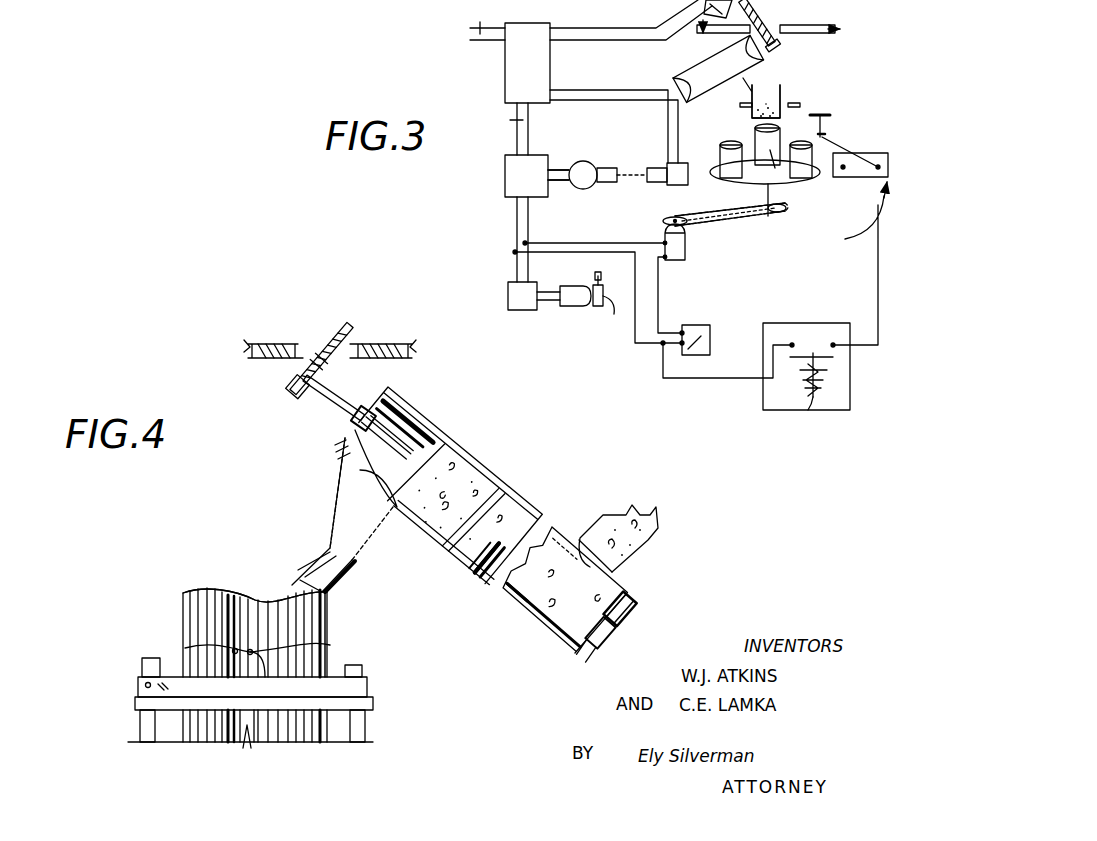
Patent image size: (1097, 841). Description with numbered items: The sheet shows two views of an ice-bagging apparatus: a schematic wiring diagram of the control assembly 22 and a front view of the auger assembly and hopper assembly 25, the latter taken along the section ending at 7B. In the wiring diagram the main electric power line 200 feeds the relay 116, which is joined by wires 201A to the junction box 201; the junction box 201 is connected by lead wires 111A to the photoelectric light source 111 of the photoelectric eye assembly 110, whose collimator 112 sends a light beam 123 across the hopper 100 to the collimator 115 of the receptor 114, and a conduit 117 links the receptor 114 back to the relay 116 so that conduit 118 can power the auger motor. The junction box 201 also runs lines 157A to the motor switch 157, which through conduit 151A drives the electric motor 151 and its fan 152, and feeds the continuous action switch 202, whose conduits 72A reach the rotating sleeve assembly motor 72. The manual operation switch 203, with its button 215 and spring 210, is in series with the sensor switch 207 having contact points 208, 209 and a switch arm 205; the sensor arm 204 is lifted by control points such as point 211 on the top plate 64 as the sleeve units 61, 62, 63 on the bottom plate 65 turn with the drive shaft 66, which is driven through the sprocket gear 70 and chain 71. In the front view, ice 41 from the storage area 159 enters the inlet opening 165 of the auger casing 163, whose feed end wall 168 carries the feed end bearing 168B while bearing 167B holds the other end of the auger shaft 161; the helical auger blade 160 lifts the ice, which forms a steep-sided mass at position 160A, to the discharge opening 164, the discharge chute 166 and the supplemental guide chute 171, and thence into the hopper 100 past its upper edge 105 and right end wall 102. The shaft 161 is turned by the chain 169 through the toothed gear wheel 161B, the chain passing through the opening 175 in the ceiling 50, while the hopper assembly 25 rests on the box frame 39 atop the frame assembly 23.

In FIG. 3, the control assembly 22 is at (432, 171).
In FIG. 4, the frame assembly 23 is at (144, 742).
In FIG. 4, the hopper assembly 25 is at (136, 598).
In FIG. 4, the top open rigid box frame 39 is at (135, 697).
In FIG. 3, the ice 41 is at (767, 96).
In FIG. 4, the ice 41 is at (466, 462).
In FIG. 4, the ceiling 50 is at (275, 347).
In FIG. 3, the sleeve unit 61 is at (805, 148).
In FIG. 4, the sleeve unit 61 is at (200, 742).
In FIG. 3, the sleeve unit 62 is at (729, 147).
In FIG. 4, the sleeve unit 62 is at (322, 742).
In FIG. 3, the sleeve unit 63 is at (766, 169).
In FIG. 4, the sleeve unit 63 is at (272, 742).
In FIG. 3, the top plate 64 is at (821, 113).
In FIG. 3, the bottom plate 65 is at (746, 185).
In FIG. 3, the drive shaft 66 is at (771, 200).
In FIG. 4, the drive shaft 66 is at (248, 742).
In FIG. 3, the sprocket gear 70 is at (772, 213).
In FIG. 3, the chain 71 is at (757, 219).
In FIG. 3, the rotating sleeve assembly motor 72 is at (686, 240).
In FIG. 3, the conduits 72A is at (662, 283).
In FIG. 3, the hopper 100 is at (784, 92).
In FIG. 4, the hopper 100 is at (200, 607).
In FIG. 4, the right end wall 102 is at (326, 626).
In FIG. 4, the upper edge 105 is at (213, 591).
In FIG. 4, the photoelectric eye assembly 110 is at (227, 648).
In FIG. 3, the photoelectric light source 111 is at (577, 166).
In FIG. 3, the lead wires 111A is at (559, 186).
In FIG. 3, the collimator 112 is at (607, 168).
In FIG. 3, the photoelectric receptor 114 is at (678, 185).
In FIG. 3, the collimator 115 is at (654, 182).
In FIG. 3, the relay 116 is at (522, 36).
In FIG. 4, the relay 116 is at (345, 670).
In FIG. 3, the conduit 117 is at (631, 97).
In FIG. 4, the conduit 117 is at (264, 651).
In FIG. 3, the conduit 118 is at (612, 24).
In FIG. 3, the light beam 123 is at (636, 168).
In FIG. 3, the electric motor 151 is at (575, 292).
In FIG. 3, the conduit 151A is at (547, 302).
In FIG. 3, the fan 152 is at (614, 303).
In FIG. 3, the motor switch 157 is at (513, 287).
In FIG. 3, the lines 157A is at (517, 218).
In FIG. 4, the storage area 159 is at (654, 510).
In FIG. 4, the auger blade 160 is at (493, 473).
In FIG. 4, the position 160A is at (373, 468).
In FIG. 4, the auger shaft 161 is at (333, 408).
In FIG. 4, the toothed gear wheel 161B is at (294, 380).
In FIG. 3, the auger casing 163 is at (712, 70).
In FIG. 4, the auger casing 163 is at (472, 573).
In FIG. 4, the discharge opening 164 is at (360, 470).
In FIG. 4, the inlet opening 165 is at (582, 536).
In FIG. 4, the discharge chute 166 is at (330, 528).
In FIG. 4, the bearing 167B is at (353, 426).
In FIG. 4, the feed end wall 168 is at (618, 599).
In FIG. 4, the feed end bearing 168B is at (600, 623).
In FIG. 4, the chain 169 is at (318, 350).
In FIG. 4, the supplemental guide chute 171 is at (348, 578).
In FIG. 4, the opening 175 is at (342, 356).
In FIG. 3, the main electric power line 200 is at (485, 20).
In FIG. 3, the junction box 201 is at (505, 176).
In FIG. 4, the junction box 201 is at (142, 667).
In FIG. 3, the wires 201A is at (497, 129).
In FIG. 3, the continuous action switch 202 is at (710, 343).
In FIG. 3, the manual operation switch 203 is at (828, 403).
In FIG. 3, the sensor arm 204 is at (840, 137).
In FIG. 3, the switch arm 205 is at (878, 153).
In FIG. 3, the sensor switch 207 is at (846, 238).
In FIG. 3, the contact point 208 is at (843, 167).
In FIG. 3, the contact point 209 is at (878, 167).
In FIG. 3, the spring 210 is at (838, 378).
In FIG. 3, the control point 211 is at (829, 128).
In FIG. 3, the button 215 is at (812, 401).
In FIG. 4, the section line 7B is at (120, 583).